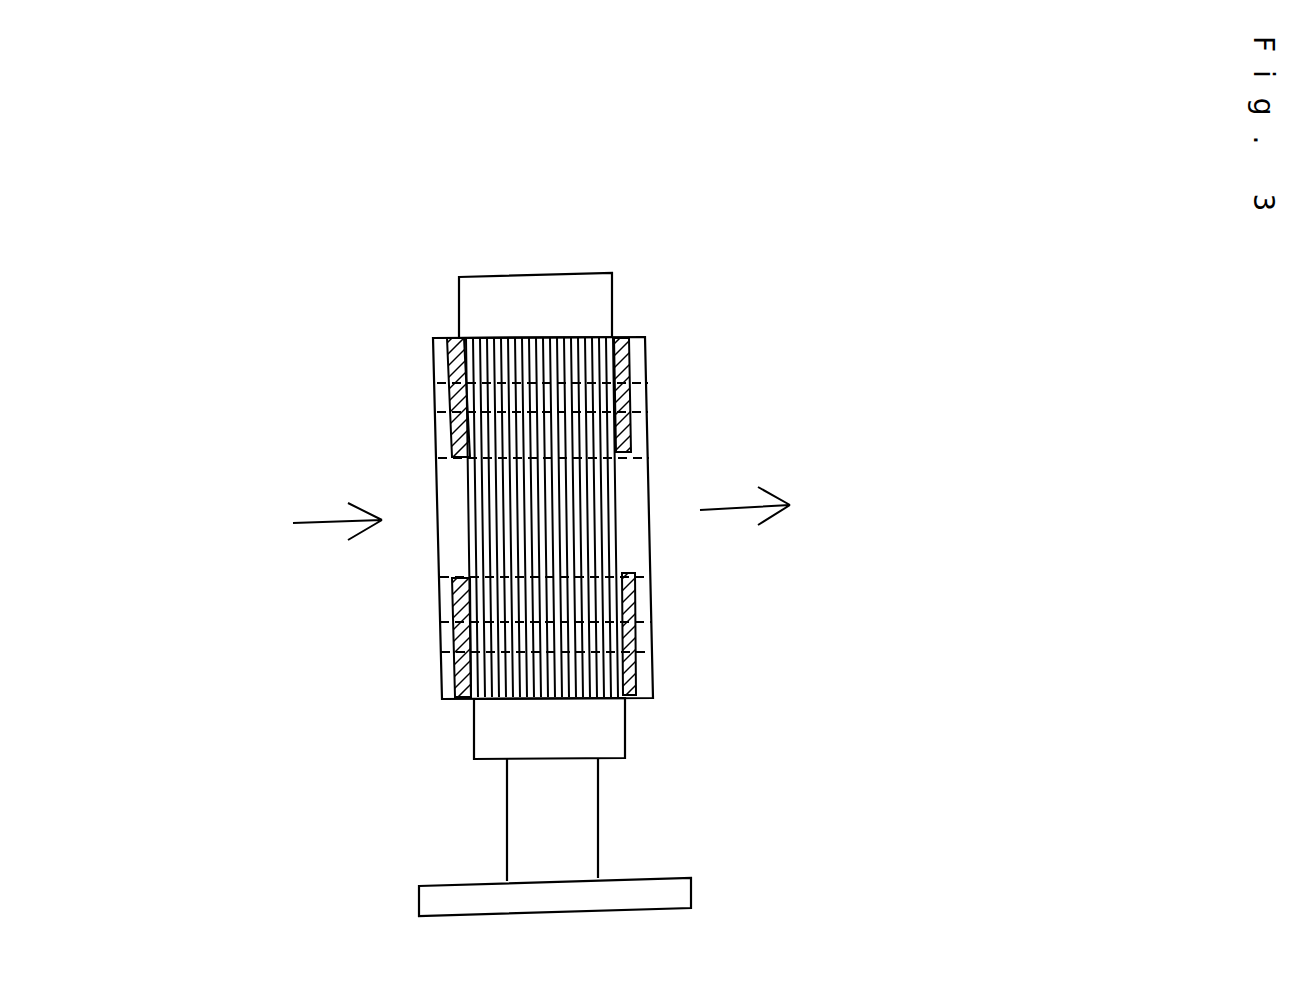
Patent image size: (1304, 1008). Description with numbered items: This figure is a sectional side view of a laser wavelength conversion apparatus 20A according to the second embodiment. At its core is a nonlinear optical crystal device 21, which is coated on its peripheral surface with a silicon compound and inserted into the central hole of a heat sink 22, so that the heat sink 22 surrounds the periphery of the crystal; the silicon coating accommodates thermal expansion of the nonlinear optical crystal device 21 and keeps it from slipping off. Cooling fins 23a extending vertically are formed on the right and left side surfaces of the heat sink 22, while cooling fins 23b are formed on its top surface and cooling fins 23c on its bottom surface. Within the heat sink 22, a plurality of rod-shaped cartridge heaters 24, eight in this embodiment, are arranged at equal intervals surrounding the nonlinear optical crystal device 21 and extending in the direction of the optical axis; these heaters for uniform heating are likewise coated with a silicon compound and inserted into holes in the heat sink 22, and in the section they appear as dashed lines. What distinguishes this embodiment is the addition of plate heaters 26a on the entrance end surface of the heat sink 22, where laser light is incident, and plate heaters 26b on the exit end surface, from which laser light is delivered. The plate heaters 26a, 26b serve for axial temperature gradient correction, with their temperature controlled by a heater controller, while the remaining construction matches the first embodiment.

The laser wavelength conversion apparatus 20A is at (602, 241).
The nonlinear optical crystal device 21 is at (613, 483).
The heat sink 22 is at (645, 357).
The cooling fins 23a is at (498, 512).
The cooling fins 23b is at (590, 297).
The cooling fins 23c is at (610, 728).
The cartridge heaters 24 is at (437, 395).
The plate heaters 26a is at (453, 340).
The plate heaters 26b is at (628, 427).